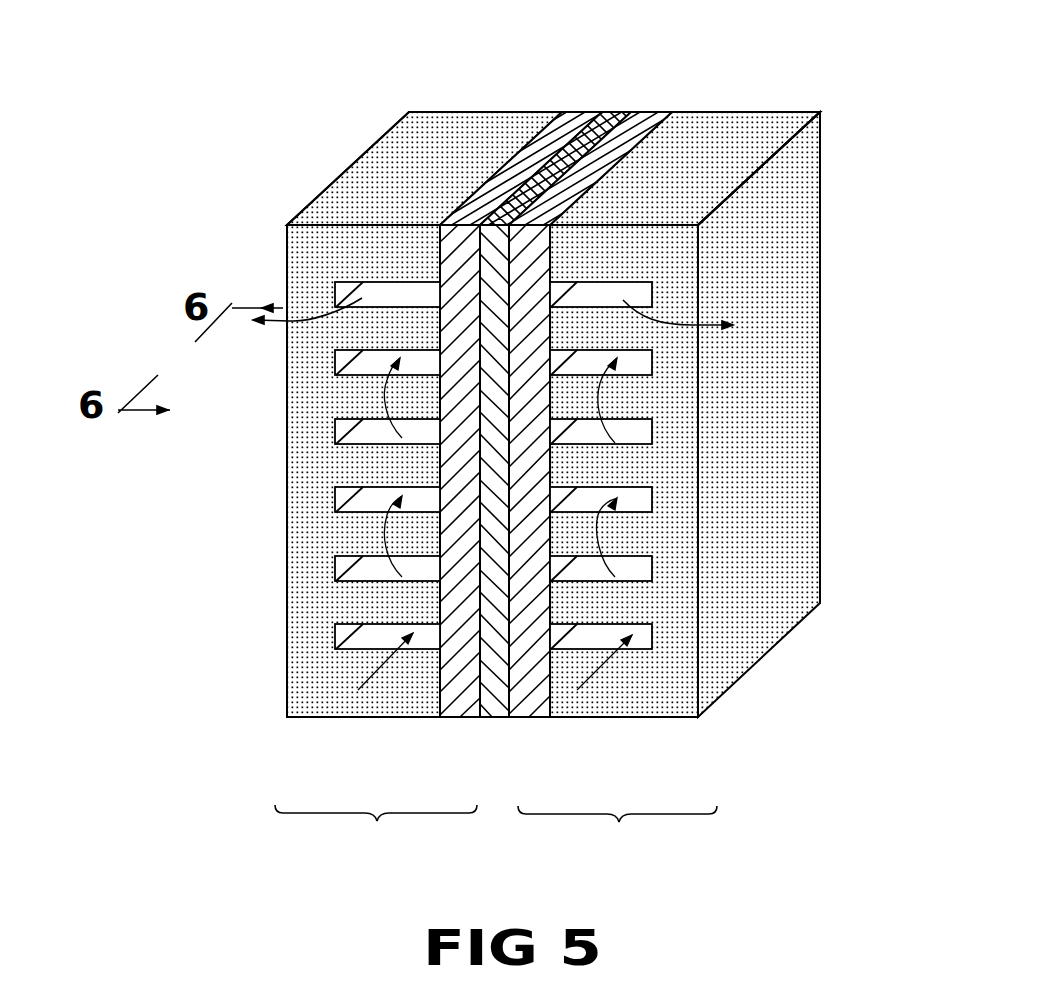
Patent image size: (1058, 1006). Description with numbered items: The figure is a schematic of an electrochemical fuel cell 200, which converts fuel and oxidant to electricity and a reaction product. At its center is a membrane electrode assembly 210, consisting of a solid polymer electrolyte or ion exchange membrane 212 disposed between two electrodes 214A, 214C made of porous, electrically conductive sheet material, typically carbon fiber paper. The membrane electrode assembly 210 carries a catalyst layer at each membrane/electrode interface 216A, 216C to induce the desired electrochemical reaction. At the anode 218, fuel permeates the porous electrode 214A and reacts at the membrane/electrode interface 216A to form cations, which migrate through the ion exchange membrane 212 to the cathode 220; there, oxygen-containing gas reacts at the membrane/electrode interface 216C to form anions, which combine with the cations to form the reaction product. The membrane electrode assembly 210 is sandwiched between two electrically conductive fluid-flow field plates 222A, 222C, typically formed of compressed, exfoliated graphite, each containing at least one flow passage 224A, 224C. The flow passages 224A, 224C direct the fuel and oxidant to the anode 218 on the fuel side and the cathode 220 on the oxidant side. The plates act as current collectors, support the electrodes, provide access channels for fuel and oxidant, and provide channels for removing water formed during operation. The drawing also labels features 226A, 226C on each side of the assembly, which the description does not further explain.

The fuel cell 200 is at (906, 478).
The membrane electrode assembly 210 is at (660, 92).
The ion exchange membrane 212 is at (622, 111).
The electrode 214A is at (577, 111).
The electrode 214C is at (660, 111).
The membrane/electrode interface 216A is at (588, 111).
The membrane/electrode interface 216C is at (640, 111).
The anode 218 is at (376, 830).
The cathode 220 is at (617, 832).
The fluid-flow field plate 222A is at (368, 150).
The fluid-flow field plate 222C is at (797, 260).
The flow passage 224A is at (367, 638).
The flow passage 224C is at (643, 642).
The first set of contacts 226A is at (270, 373).
The second set of contacts 226C is at (597, 538).